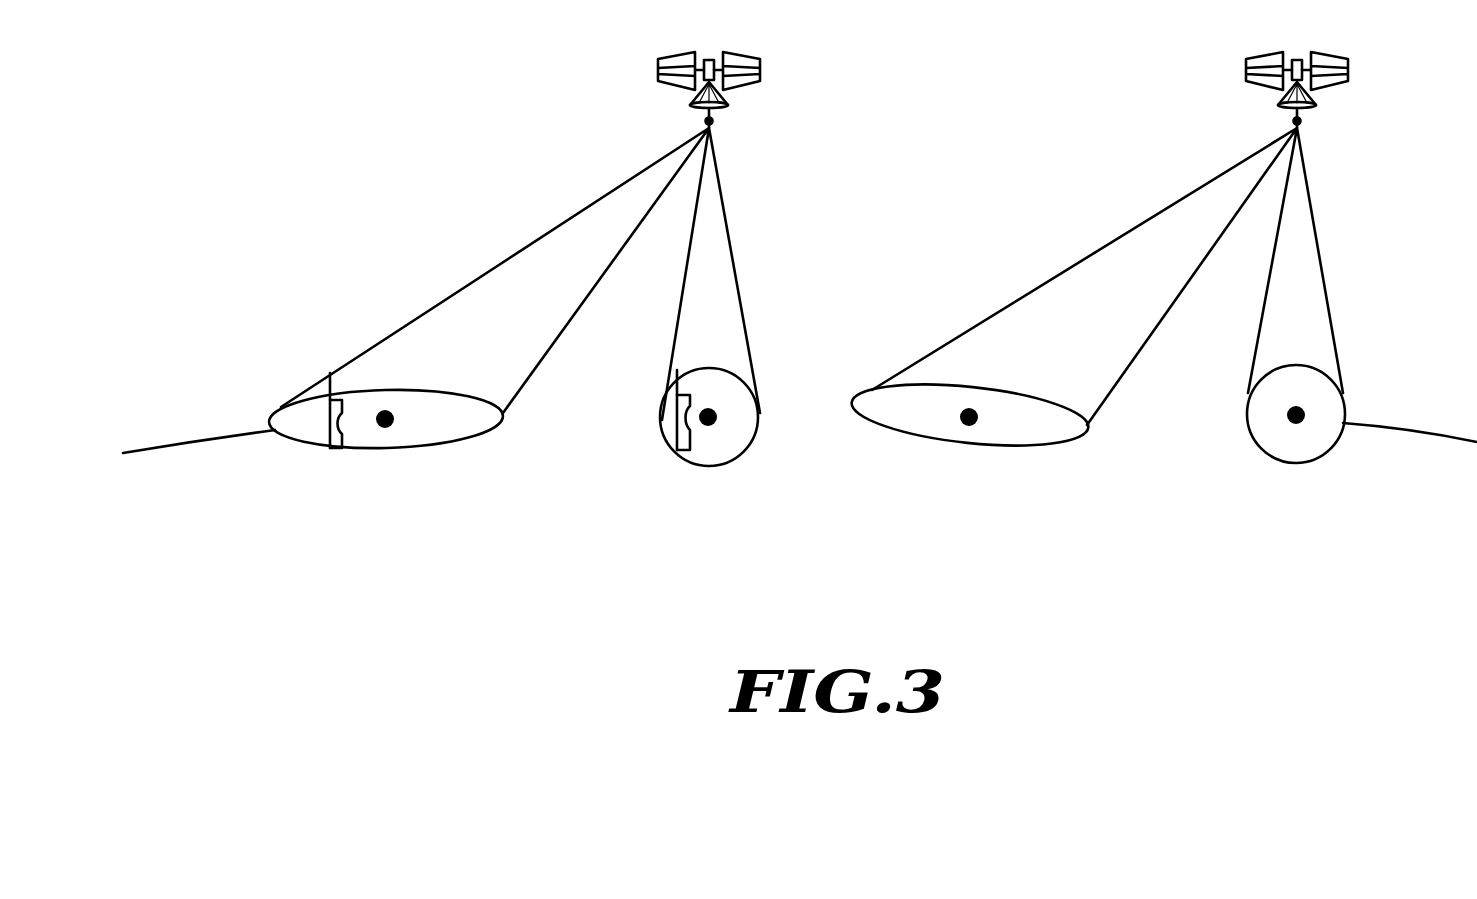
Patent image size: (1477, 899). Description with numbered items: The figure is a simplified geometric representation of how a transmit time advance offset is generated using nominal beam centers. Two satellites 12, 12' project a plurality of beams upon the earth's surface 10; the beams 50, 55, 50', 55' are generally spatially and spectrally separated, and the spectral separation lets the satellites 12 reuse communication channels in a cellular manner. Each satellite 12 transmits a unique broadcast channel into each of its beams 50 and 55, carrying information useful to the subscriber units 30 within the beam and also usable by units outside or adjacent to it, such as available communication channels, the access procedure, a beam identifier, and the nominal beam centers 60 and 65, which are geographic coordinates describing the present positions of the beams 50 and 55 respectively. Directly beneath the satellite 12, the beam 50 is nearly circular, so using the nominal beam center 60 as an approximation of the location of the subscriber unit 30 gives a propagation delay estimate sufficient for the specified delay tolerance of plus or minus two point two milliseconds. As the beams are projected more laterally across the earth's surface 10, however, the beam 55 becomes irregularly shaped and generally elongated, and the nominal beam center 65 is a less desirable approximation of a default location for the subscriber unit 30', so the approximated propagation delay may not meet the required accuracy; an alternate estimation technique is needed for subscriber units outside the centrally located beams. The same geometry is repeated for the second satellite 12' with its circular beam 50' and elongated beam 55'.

The earth's surface 10 is at (233, 432).
The satellite 12 is at (739, 79).
The satellite 12' is at (1327, 82).
The subscriber unit 30 is at (640, 438).
The subscriber unit 30' is at (298, 436).
The beam 50 is at (732, 434).
The beam 50' is at (1312, 429).
The beam 55 is at (385, 445).
The beam 55' is at (973, 440).
The nominal beam center 60 is at (713, 423).
The nominal beam center 65 is at (388, 428).